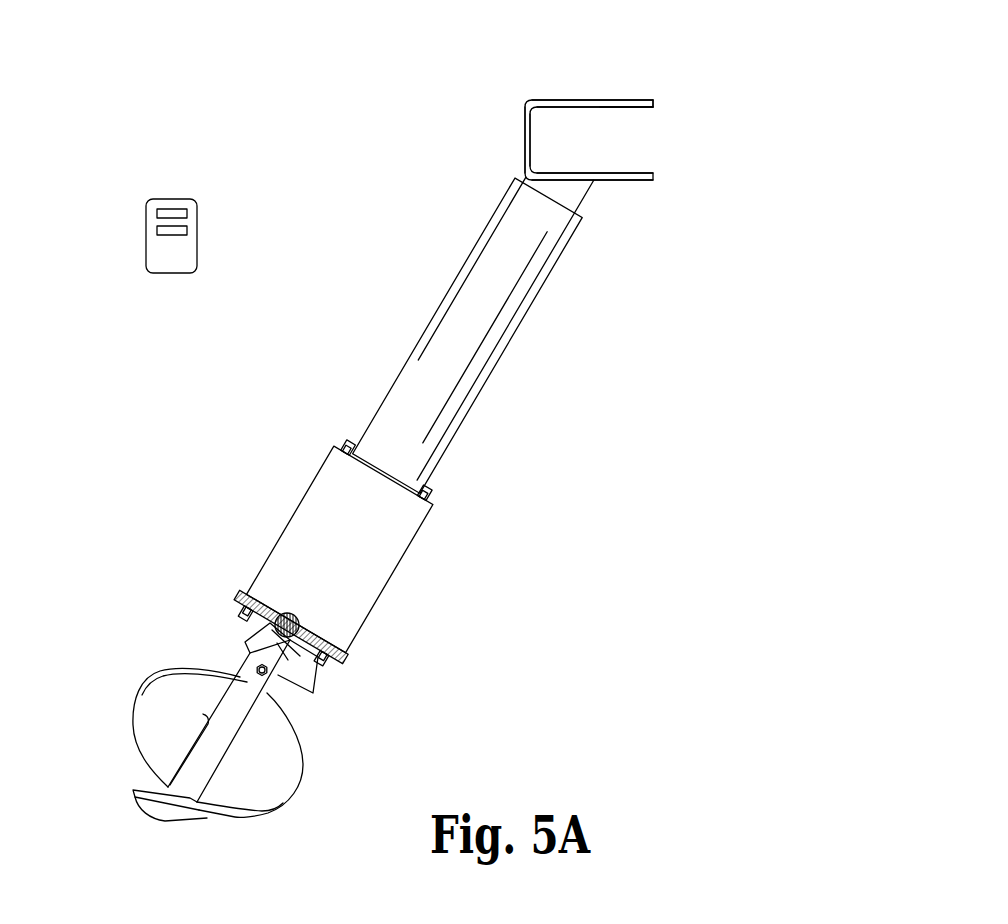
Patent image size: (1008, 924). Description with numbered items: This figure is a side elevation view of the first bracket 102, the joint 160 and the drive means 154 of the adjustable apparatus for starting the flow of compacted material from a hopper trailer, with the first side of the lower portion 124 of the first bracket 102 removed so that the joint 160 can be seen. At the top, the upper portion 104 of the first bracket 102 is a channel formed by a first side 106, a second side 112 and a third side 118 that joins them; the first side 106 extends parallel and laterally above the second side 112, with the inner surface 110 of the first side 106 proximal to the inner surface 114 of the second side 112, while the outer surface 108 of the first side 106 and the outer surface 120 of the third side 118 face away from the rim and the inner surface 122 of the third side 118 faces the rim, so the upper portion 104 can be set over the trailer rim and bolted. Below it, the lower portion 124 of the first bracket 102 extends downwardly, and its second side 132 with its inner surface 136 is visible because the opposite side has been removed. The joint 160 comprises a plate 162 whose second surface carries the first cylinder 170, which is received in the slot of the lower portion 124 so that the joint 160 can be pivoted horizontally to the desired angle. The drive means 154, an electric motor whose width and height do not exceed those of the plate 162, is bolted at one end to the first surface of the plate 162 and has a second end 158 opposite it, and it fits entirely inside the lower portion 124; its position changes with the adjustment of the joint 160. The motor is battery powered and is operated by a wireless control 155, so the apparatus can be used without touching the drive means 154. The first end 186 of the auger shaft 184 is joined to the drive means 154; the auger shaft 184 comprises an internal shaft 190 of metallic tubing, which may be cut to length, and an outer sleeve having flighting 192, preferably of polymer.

The first bracket 102 is at (530, 100).
The upper portion of the first bracket 104 is at (555, 100).
The first side of the upper portion 106 is at (605, 105).
The outer surface of the first side 108 is at (643, 100).
The inner surface of the first side 110 is at (643, 107).
The second side of the upper portion 112 is at (617, 180).
The inner surface of the second side 114 is at (630, 173).
The third side of the upper portion 118 is at (525, 147).
The outer surface of the third side 120 is at (527, 130).
The inner surface of the third side 122 is at (530, 132).
The lower portion of the first bracket 124 is at (478, 245).
The second side of the lower portion 132 is at (253, 640).
The inner surface of the second side of the lower portion 136 is at (313, 673).
The drive means 154 is at (307, 497).
The wireless control 155 is at (157, 252).
The second end of the drive means 158 is at (563, 247).
The joint 160 is at (243, 597).
The plate 162 is at (242, 601).
The first cylinder 170 is at (296, 612).
The auger shaft 184 is at (237, 722).
The first end of the auger shaft 186 is at (248, 680).
The internal shaft 190 is at (285, 668).
The outer sleeve having flighting 192 is at (262, 788).